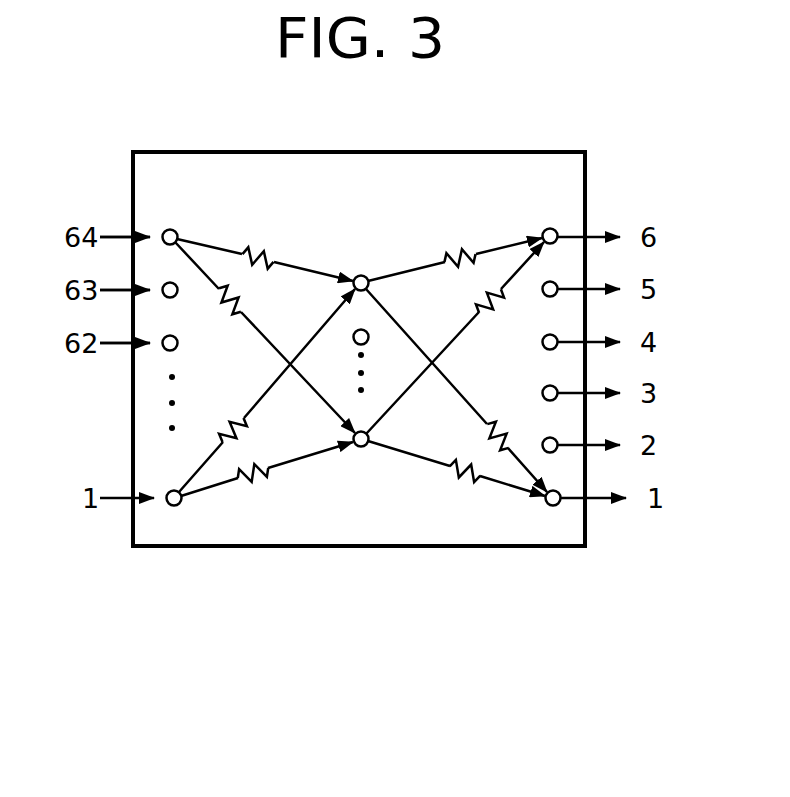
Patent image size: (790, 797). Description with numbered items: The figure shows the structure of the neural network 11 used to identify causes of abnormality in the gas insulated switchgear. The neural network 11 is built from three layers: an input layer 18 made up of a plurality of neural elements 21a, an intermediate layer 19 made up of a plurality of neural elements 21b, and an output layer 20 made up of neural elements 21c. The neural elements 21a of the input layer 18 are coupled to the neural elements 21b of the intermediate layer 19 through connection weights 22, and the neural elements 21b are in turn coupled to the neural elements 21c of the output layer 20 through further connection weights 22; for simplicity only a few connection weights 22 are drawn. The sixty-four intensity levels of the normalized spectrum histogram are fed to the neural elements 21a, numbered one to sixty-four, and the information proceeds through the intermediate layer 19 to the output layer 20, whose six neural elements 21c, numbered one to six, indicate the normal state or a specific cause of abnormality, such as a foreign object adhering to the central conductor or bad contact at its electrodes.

The neural network 11 is at (590, 138).
The input layer 18 is at (168, 218).
The intermediate layer 19 is at (362, 266).
The output layer 20 is at (548, 220).
The neural elements 21a is at (176, 506).
The neural elements 21b is at (364, 447).
The neural elements 21c is at (553, 506).
The connection weights 22 is at (254, 248).